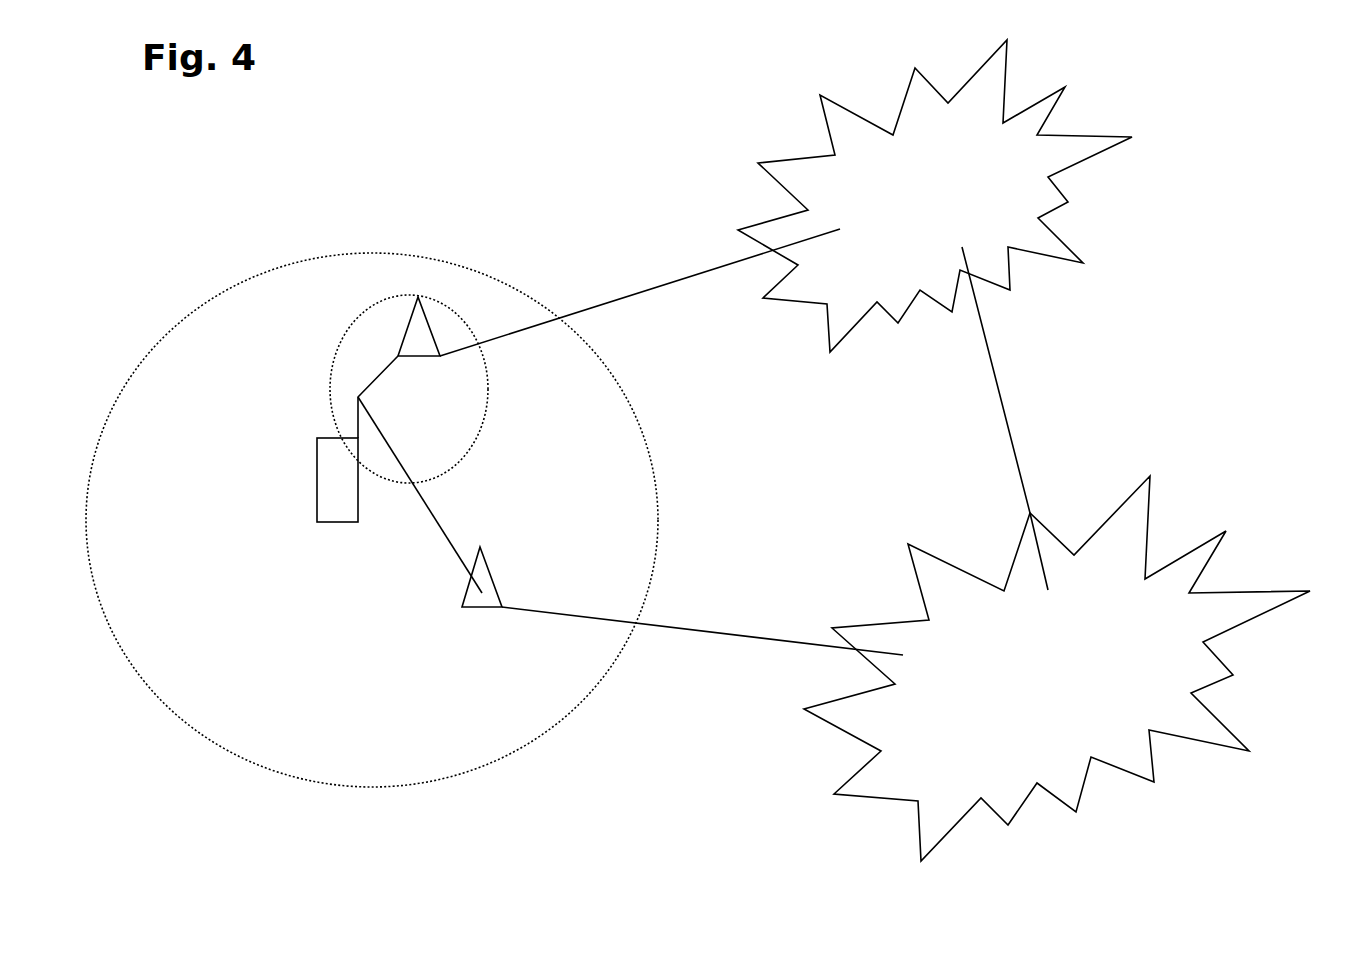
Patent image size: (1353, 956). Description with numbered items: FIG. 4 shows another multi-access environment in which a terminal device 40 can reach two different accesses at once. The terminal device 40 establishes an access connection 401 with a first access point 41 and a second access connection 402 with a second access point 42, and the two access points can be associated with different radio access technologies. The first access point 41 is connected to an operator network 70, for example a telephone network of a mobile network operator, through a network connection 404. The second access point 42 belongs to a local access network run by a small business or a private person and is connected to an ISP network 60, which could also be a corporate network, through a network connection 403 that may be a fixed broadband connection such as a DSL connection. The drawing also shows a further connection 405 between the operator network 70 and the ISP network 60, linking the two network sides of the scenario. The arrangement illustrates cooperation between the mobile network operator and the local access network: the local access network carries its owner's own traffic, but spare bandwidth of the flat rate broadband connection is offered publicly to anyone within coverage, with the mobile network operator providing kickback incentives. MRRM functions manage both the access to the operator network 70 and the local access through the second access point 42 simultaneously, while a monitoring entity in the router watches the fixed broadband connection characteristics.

The terminal device 40 is at (320, 500).
The first access point 41 is at (474, 602).
The second access point 42 is at (409, 389).
The ISP network 60 is at (935, 196).
The operator network 70 is at (1057, 668).
The access connection 401 is at (428, 495).
The second access connection 402 is at (370, 385).
The network connection 403 is at (640, 292).
The network connection 404 is at (702, 647).
The communication link between first and second network 405 is at (1008, 418).